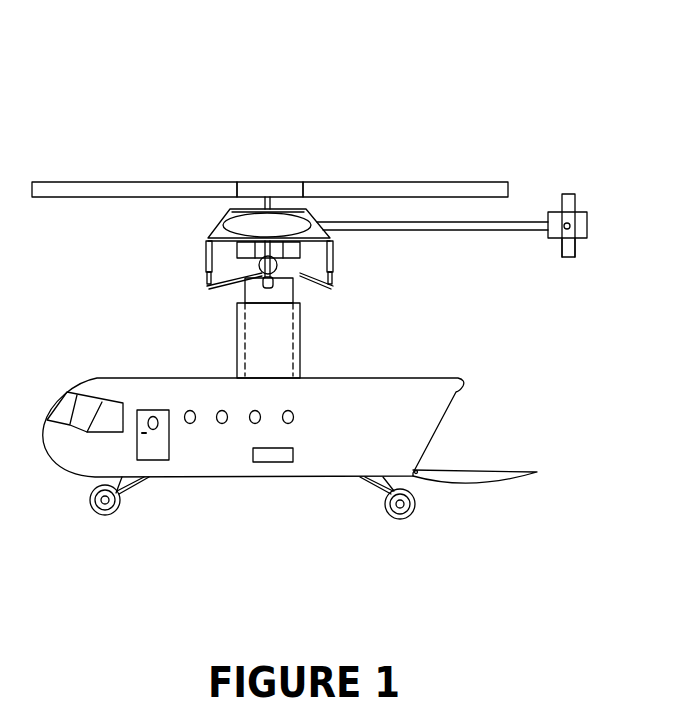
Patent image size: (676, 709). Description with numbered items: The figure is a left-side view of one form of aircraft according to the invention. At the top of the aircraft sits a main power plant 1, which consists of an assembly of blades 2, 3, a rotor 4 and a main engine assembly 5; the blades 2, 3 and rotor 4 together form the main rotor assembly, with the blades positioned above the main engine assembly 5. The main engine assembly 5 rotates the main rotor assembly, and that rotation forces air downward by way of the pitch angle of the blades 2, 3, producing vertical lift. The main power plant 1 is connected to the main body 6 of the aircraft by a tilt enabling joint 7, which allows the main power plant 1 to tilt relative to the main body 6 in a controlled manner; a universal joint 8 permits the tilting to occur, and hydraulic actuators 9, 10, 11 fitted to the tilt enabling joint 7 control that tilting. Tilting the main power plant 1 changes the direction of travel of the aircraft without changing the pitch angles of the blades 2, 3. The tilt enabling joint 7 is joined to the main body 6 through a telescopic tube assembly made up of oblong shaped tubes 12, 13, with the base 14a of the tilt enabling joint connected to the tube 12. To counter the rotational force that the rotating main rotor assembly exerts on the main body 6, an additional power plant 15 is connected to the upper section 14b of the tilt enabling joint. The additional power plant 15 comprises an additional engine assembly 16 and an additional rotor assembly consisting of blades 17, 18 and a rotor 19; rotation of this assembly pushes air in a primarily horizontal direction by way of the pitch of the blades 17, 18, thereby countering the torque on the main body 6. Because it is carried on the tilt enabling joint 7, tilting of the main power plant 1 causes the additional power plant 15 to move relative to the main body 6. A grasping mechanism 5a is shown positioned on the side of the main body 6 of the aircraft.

The main power plant 1 is at (284, 143).
The blade 2 is at (380, 188).
The blade 3 is at (152, 187).
The rotor 4 is at (265, 199).
The main engine assembly 5 is at (247, 226).
The grasping mechanism 5a is at (274, 456).
The main body 6 is at (335, 457).
The tilt enabling joint 7 is at (180, 262).
The universal joint 8 is at (252, 271).
The hydraulic actuator 9 is at (243, 281).
The hydraulic actuator 10 is at (205, 250).
The hydraulic actuator 11 is at (333, 270).
The oblong shaped tube 12 is at (250, 292).
The oblong shaped tube 13 is at (242, 348).
The base of the tilt enabling joint 14a is at (308, 283).
The upper section of the tilt enabling joint 14b is at (330, 238).
The additional power plant 15 is at (558, 264).
The additional engine assembly 16 is at (582, 222).
The blade 17 is at (567, 194).
The blade 18 is at (568, 258).
The rotor 19 is at (565, 229).